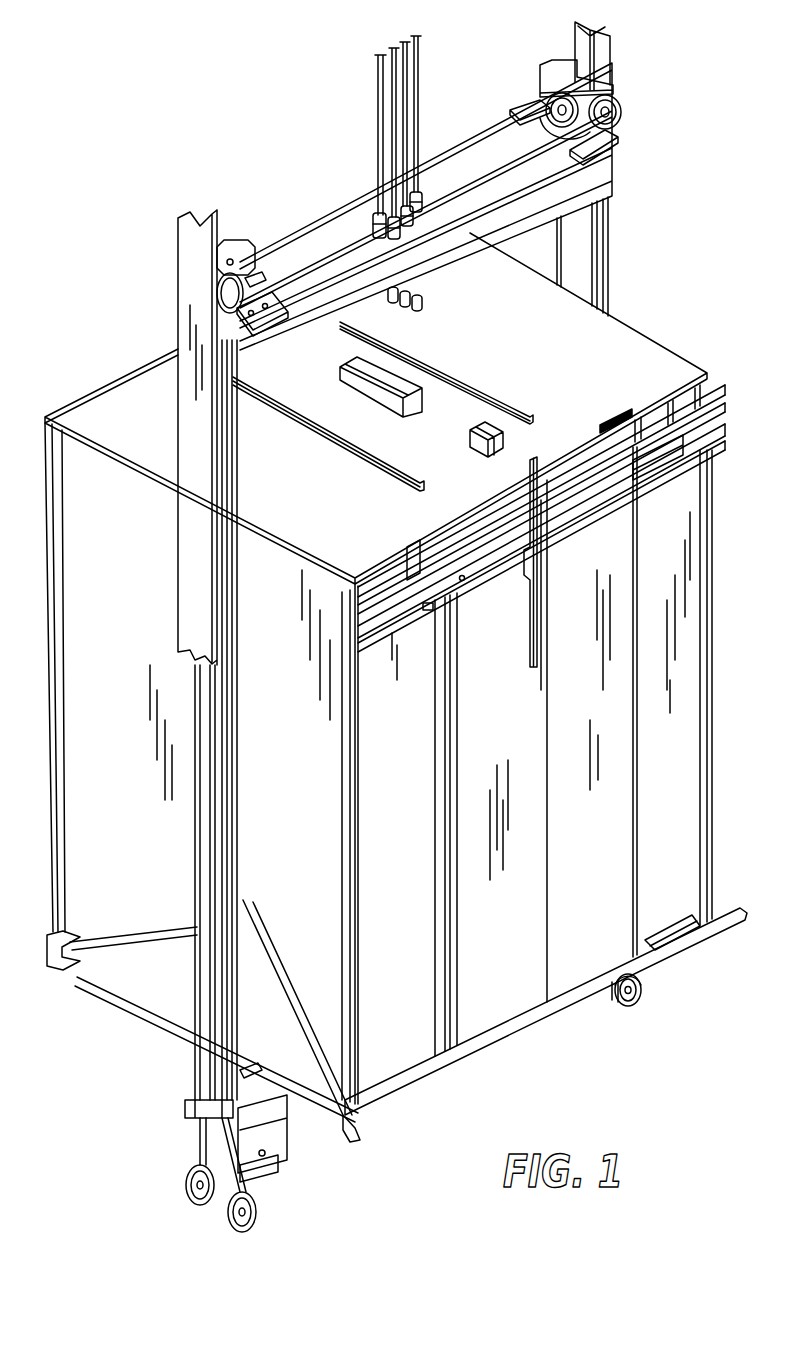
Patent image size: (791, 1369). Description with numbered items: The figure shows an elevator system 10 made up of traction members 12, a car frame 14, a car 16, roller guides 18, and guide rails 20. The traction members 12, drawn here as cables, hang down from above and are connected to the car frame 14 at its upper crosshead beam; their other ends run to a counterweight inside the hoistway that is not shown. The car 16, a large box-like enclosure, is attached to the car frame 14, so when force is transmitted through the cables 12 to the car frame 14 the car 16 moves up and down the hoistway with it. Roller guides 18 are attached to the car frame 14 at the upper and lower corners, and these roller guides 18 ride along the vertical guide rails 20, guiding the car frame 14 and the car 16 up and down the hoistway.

The elevator system 10 is at (185, 157).
The traction members 12 is at (380, 110).
The car frame 14 is at (538, 200).
The car 16 is at (632, 397).
The roller guides 18 is at (233, 253).
The guide rails 20 is at (200, 247).